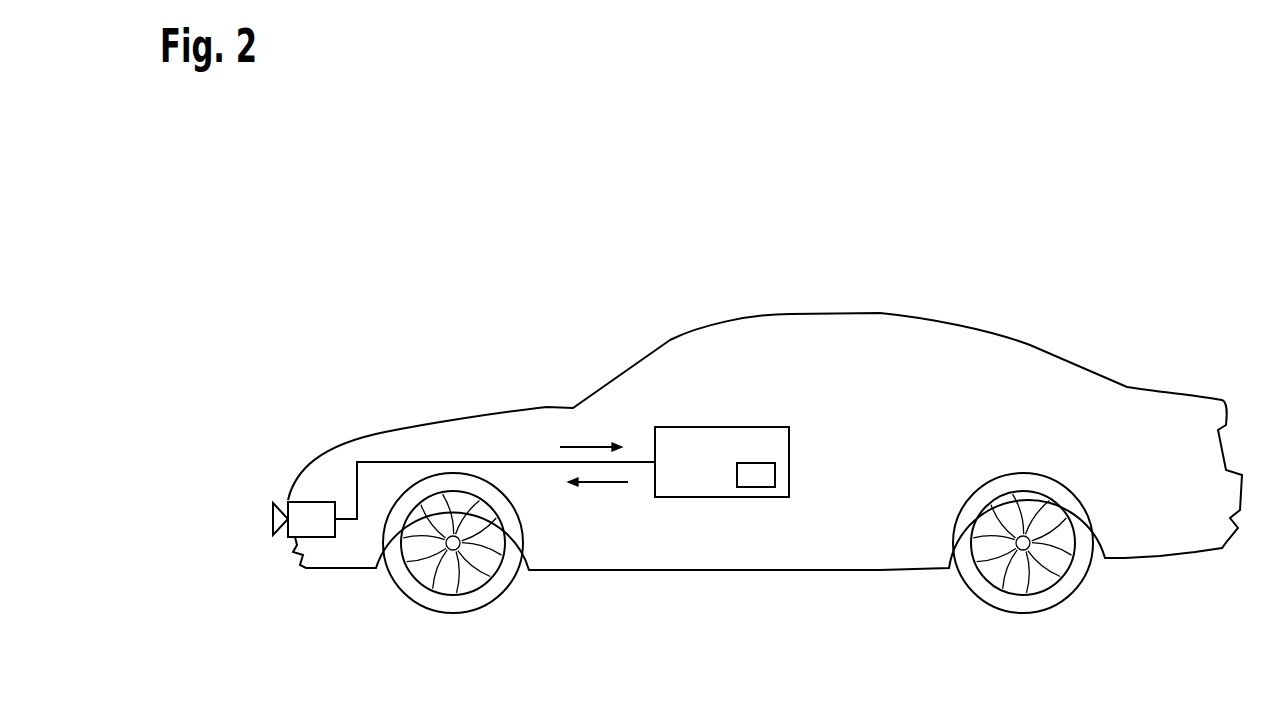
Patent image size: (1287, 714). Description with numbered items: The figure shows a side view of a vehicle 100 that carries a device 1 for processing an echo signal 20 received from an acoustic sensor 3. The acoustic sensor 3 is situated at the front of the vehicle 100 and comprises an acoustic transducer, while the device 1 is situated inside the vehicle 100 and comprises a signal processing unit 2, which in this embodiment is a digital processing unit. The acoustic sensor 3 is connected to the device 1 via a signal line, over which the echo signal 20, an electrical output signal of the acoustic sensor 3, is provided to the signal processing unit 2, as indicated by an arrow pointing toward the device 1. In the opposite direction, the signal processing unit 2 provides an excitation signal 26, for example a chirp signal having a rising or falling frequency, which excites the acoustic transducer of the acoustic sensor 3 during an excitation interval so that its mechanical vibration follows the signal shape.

The vehicle 100 is at (365, 218).
The acoustic sensor 3 is at (309, 502).
The echo signal 20 is at (590, 447).
The excitation signal 26 is at (603, 484).
The device 1 is at (730, 427).
The signal processing unit 2 is at (757, 487).